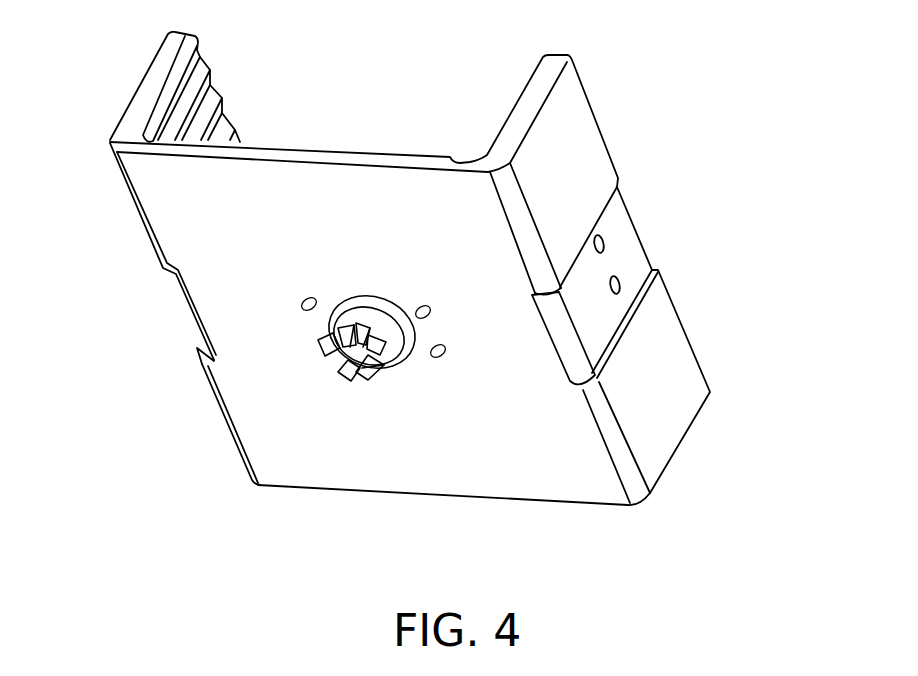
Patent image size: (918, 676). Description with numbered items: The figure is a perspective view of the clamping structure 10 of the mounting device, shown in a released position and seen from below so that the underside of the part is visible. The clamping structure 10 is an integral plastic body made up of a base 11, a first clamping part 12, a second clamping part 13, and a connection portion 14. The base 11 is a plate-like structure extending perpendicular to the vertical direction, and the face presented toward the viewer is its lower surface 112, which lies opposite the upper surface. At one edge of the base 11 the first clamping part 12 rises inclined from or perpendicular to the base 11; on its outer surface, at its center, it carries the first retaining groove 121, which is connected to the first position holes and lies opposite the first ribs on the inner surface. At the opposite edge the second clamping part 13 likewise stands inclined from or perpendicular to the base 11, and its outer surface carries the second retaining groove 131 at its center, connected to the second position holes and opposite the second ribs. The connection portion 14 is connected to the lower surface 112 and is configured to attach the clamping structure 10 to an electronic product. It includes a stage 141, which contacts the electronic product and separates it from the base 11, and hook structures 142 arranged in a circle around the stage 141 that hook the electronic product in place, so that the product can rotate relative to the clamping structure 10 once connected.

The clamping structure 10 is at (765, 28).
The base 11 is at (410, 493).
The lower surface 112 is at (510, 443).
The first clamping part 12 is at (140, 78).
The first retaining groove 121 is at (188, 322).
The second clamping part 13 is at (617, 145).
The second retaining groove 131 is at (636, 258).
The connection portion 14 is at (368, 395).
The stage 141 is at (365, 297).
The hook structures 142 is at (392, 330).